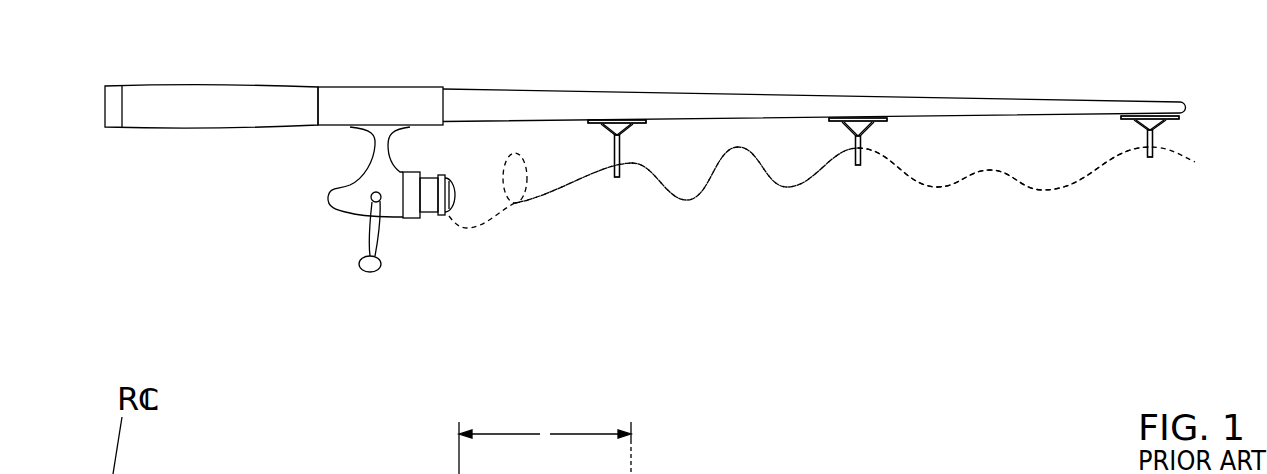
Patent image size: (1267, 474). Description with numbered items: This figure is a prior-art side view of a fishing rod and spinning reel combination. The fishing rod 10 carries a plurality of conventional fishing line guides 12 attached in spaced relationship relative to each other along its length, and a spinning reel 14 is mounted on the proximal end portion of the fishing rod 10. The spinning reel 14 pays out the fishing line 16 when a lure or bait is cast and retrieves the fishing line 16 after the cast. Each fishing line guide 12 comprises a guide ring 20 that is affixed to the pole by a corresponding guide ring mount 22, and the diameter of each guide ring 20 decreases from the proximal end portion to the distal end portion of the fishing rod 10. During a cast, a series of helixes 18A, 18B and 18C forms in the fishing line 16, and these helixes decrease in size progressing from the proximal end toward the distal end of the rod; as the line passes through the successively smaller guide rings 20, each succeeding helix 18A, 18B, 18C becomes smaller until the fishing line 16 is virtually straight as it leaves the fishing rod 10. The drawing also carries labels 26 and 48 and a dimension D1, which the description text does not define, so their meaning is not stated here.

The fishing rod 10 is at (833, 95).
The fishing line guide 12 is at (620, 203).
The spinning reel 14 is at (338, 208).
The fishing line 16 is at (803, 180).
The helix 18A is at (548, 241).
The helix 18B is at (758, 205).
The helix 18C is at (1038, 207).
The guide ring 20 is at (618, 178).
The guide ring mount 22 is at (619, 148).
The rod component 26 is at (838, 473).
The rod component 48 is at (736, 466).
The guide spacing distance D1 is at (545, 448).